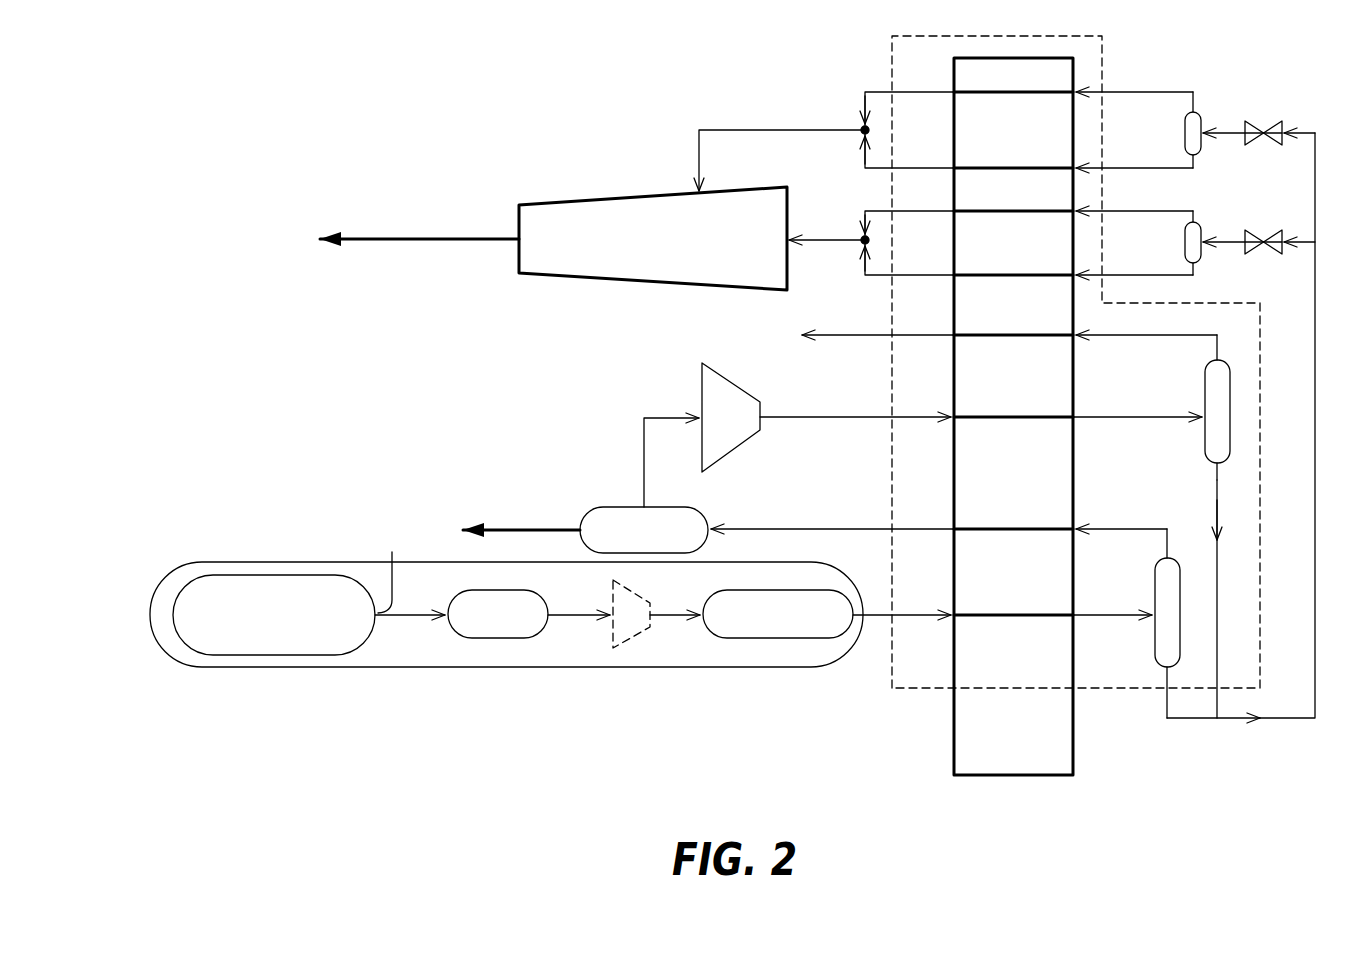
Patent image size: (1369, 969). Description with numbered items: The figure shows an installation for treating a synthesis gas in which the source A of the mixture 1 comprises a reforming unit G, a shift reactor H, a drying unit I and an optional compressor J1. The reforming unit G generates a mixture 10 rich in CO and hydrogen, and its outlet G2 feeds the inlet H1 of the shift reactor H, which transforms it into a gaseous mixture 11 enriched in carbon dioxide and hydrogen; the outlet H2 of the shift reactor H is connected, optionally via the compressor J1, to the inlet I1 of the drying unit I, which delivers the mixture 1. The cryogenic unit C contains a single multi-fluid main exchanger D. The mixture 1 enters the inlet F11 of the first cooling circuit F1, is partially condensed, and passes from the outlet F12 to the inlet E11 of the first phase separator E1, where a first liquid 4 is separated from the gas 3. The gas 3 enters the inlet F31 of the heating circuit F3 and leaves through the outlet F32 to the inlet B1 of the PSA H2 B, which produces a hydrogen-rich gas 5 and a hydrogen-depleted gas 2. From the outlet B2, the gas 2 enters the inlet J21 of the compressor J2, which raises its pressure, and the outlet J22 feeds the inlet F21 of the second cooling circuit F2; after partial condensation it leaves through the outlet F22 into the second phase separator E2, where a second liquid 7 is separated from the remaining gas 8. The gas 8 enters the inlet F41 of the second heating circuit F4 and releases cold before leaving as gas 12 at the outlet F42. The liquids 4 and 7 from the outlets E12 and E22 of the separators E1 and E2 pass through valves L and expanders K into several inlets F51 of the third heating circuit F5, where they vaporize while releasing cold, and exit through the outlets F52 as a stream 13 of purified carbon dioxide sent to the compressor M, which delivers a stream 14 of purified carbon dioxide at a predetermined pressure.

The mixture 1 is at (882, 622).
The hydrogen-depleted gas 2 is at (640, 437).
The gas 3 is at (1150, 527).
The first liquid 4 is at (1178, 722).
The H2-rich gas 5 is at (535, 526).
The second liquid 7 is at (1224, 538).
The remaining gas 8 is at (1222, 350).
The mixture rich in CO and H2 10 is at (410, 623).
The gaseous mixture enriched in CO2 and H2 11 is at (585, 623).
The gas containing uncondensables 12 is at (872, 332).
The stream of purified CO2 13 is at (777, 128).
The stream of purified CO2 at predetermined pressure 14 is at (395, 237).
The source of mixture A is at (255, 668).
The PSA H2 B is at (644, 530).
The inlet of the PSA H2 B1 is at (712, 525).
The hydrogen-depleted gas outlet B2 is at (644, 505).
The cryogenic unit C is at (1258, 580).
The main exchanger D is at (1005, 778).
The first phase separator E1 is at (1170, 620).
The inlet of the first phase separator E11 is at (1152, 612).
The outlet of the first phase separator E12 is at (1163, 669).
The second phase separator E2 is at (1218, 417).
The outlet of the second phase separator E22 is at (1214, 466).
The first cooling circuit F1 is at (978, 618).
The inlet of the first cooling circuit F11 is at (952, 617).
The outlet of the first cooling circuit F12 is at (1075, 617).
The second cooling circuit F2 is at (997, 414).
The inlet of the second cooling circuit F21 is at (950, 415).
The outlet of the second cooling circuit F22 is at (1075, 416).
The heating circuit F3 is at (997, 526).
The inlet of the heating circuit F31 is at (1075, 528).
The outlet of the heating circuit F32 is at (950, 527).
The second heating circuit F4 is at (1040, 332).
The inlet of the second heating circuit F41 is at (1075, 338).
The outlet of the second heating circuit F42 is at (951, 338).
The third heating circuit F5 is at (1040, 98).
The inlets of the third heating circuit F51 is at (1075, 96).
The outlets of the third heating circuit F52 is at (954, 92).
The reforming unit G is at (274, 615).
The outlet of the reforming unit G2 is at (392, 569).
The shift reactor H is at (498, 614).
The inlet of the shift reactor H1 is at (445, 612).
The outlet of the shift reactor H2 is at (552, 612).
The drying unit I is at (778, 614).
The inlet of the drying unit I1 is at (700, 612).
The compressor J1 is at (656, 614).
The compressor J2 is at (731, 417).
The inlet of the compressor J21 is at (700, 408).
The outlet of the compressor J22 is at (762, 425).
The expanders K is at (1202, 116).
The valves L is at (1266, 129).
The compressor M is at (653, 238).